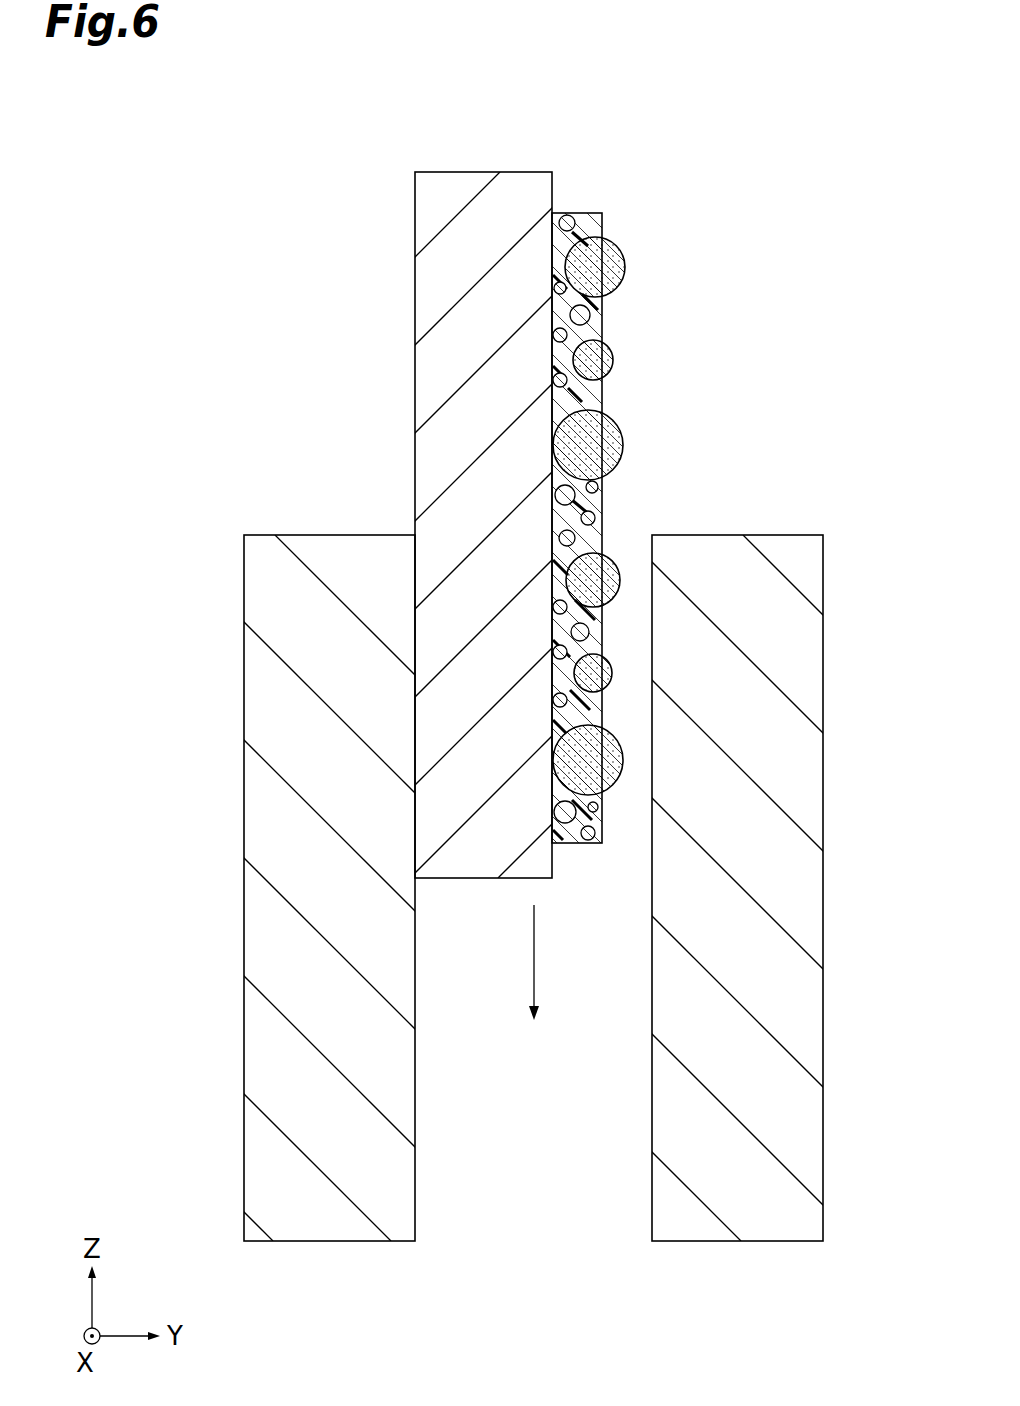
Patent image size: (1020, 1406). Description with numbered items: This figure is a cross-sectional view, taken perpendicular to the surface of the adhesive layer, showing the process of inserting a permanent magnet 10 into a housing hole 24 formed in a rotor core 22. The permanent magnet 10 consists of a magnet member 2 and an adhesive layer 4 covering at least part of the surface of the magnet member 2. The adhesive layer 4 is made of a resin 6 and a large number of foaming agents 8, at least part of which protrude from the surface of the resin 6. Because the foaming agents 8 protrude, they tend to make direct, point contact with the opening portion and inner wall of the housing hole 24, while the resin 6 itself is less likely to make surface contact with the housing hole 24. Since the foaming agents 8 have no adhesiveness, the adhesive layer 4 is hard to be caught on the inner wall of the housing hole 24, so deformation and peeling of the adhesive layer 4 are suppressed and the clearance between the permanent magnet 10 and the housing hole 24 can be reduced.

The permanent magnet 10 is at (506, 113).
The magnet member 2 is at (517, 172).
The adhesive layer 4 is at (655, 156).
The resin 6 is at (582, 213).
The foaming agents 8 is at (616, 246).
The rotor core 22 is at (328, 1242).
The housing hole 24 is at (419, 1166).